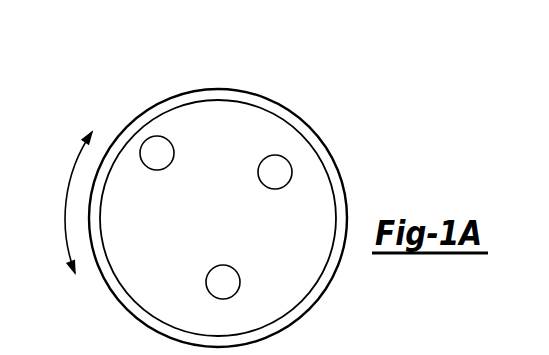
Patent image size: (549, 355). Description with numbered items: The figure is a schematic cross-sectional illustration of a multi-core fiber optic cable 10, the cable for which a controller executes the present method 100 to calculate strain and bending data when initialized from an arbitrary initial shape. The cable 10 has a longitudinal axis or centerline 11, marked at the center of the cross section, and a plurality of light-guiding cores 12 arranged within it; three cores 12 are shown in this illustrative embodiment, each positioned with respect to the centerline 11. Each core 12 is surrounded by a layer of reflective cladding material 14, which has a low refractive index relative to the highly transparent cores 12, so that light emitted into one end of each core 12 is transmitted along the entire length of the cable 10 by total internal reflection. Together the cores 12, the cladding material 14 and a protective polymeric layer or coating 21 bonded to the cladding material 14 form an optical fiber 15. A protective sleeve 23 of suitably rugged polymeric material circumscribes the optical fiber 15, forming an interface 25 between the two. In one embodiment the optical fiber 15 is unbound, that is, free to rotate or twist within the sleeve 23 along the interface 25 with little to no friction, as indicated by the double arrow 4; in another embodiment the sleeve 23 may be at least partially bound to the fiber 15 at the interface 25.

The multi-core fiber optic cable 10 is at (190, 42).
The method 100 is at (253, 47).
The optical fiber 15 is at (327, 156).
The protective sleeve 23 is at (287, 110).
The interface 25 is at (188, 107).
The protective polymeric layer or coating 21 is at (242, 108).
The cladding material 14 is at (275, 271).
The centerline 11 is at (202, 223).
The light-guiding cores 12 is at (152, 152).
The double arrow 4 is at (65, 212).